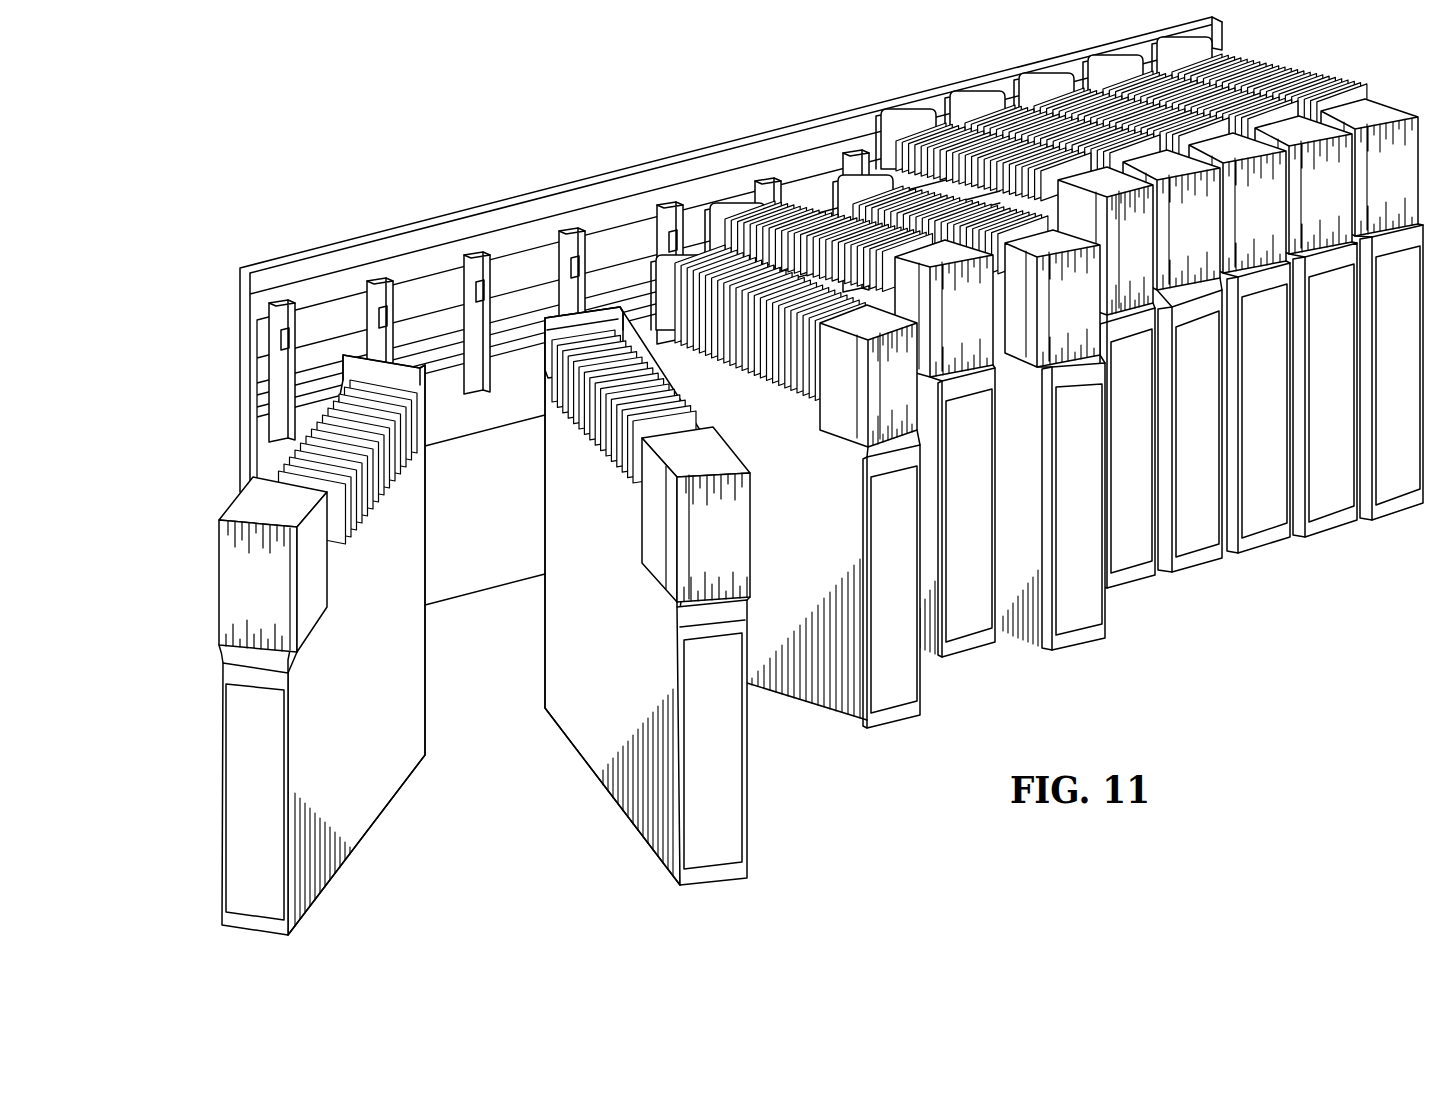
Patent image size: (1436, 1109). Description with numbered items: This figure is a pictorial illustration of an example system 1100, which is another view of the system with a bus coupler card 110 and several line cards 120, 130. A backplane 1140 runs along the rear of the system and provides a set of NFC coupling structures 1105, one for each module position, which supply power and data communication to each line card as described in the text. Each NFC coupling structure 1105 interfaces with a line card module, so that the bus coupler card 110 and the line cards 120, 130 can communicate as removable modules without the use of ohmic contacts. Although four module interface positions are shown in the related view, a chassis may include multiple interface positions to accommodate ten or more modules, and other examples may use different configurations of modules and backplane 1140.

The bus coupler card 110 is at (232, 582).
The line card 120 is at (740, 812).
The line card 130 is at (908, 684).
The system 1100 is at (571, 87).
The NFC coupling structure 1105 is at (378, 277).
The backplane 1140 is at (704, 156).